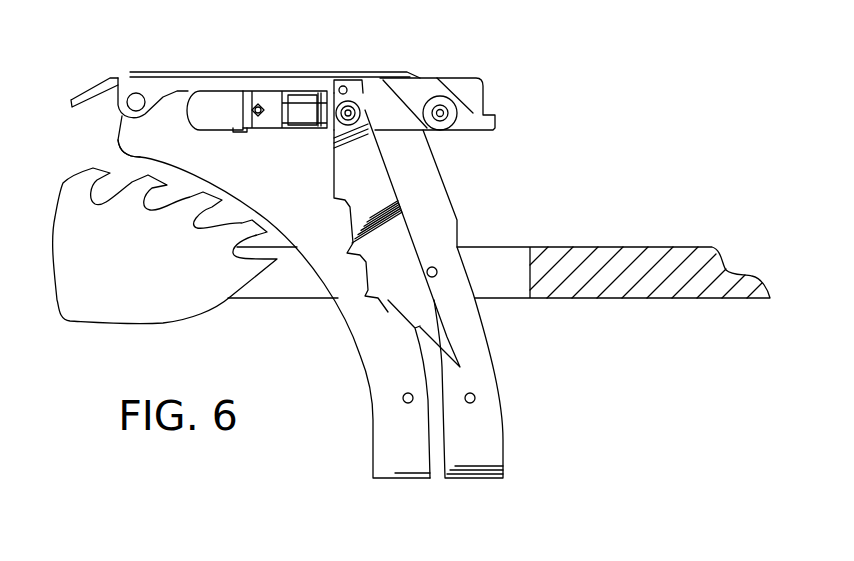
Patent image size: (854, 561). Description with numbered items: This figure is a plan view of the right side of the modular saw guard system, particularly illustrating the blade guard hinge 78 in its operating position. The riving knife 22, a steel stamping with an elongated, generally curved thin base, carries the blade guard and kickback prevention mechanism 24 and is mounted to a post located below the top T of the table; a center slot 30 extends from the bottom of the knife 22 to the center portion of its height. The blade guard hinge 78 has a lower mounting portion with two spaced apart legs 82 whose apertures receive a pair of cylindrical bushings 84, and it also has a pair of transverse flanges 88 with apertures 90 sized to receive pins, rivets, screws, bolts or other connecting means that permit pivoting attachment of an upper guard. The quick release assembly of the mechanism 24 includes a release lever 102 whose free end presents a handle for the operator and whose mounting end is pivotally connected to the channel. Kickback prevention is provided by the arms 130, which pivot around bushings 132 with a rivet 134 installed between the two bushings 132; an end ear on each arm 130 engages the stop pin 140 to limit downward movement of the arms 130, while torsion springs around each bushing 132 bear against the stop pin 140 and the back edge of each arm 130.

The blade guard and kickback prevention mechanism 24 is at (405, 42).
The blade guard hinge 78 is at (187, 72).
The apertures 90 is at (137, 99).
The transverse flanges 88 is at (117, 112).
The release lever 102 is at (215, 108).
The stop pin 140 is at (342, 86).
The rivet 134 is at (360, 105).
The bushings 132 is at (345, 138).
The legs 82 is at (420, 95).
The cylindrical bushings 84 is at (448, 110).
The riving knife 22 is at (390, 375).
The arms 130 is at (410, 308).
The center slot 30 is at (443, 463).
The top of the table T is at (632, 247).